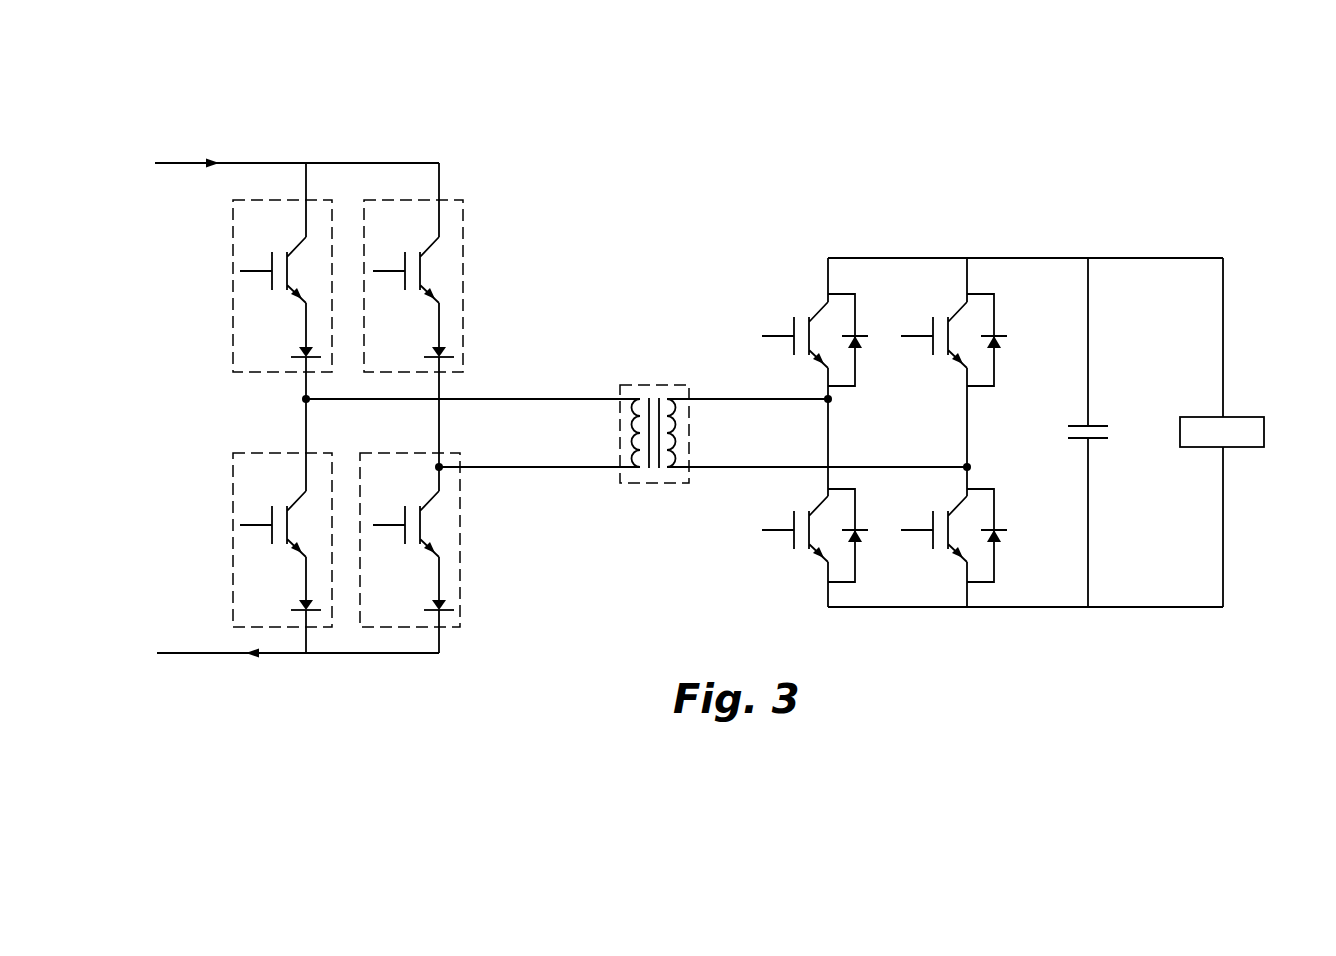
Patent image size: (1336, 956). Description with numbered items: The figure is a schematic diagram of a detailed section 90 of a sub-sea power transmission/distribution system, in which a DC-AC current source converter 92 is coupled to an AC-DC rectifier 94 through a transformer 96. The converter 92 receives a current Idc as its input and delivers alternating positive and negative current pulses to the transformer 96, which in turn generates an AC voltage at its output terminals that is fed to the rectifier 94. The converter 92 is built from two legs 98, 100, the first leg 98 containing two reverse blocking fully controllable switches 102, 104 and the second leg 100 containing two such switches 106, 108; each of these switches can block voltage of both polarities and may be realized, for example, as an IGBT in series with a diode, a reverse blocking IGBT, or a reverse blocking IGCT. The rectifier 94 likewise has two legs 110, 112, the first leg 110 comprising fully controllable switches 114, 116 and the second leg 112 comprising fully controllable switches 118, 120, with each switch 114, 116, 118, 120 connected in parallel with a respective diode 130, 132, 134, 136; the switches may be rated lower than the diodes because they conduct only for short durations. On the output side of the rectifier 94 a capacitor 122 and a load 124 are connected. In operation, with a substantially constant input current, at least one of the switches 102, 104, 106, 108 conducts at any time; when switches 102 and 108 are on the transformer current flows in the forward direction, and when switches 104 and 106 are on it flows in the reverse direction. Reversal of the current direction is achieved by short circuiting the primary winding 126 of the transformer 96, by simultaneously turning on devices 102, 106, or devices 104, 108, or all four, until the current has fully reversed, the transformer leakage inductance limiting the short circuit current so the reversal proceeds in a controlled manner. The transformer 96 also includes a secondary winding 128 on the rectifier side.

The detailed section 90 is at (1230, 105).
The DC-AC current source converter 92 is at (385, 76).
The AC-DC rectifier 94 is at (1110, 170).
The transformer 96 is at (690, 238).
The leg 98 is at (306, 183).
The leg 100 is at (439, 180).
The reverse blocking fully controllable switch 102 is at (233, 222).
The reverse blocking fully controllable switch 104 is at (233, 564).
The reverse blocking fully controllable switch 106 is at (463, 226).
The reverse blocking fully controllable switch 108 is at (460, 566).
The leg 110 is at (828, 278).
The leg 112 is at (967, 271).
The fully controllable switch 114 is at (781, 322).
The fully controllable switch 116 is at (783, 513).
The fully controllable switch 118 is at (930, 364).
The fully controllable switch 120 is at (926, 548).
The capacitor 122 is at (1092, 426).
The load 124 is at (1236, 417).
The primary winding 126 is at (640, 470).
The secondary winding 128 is at (668, 400).
The diode 130 is at (864, 322).
The diode 132 is at (864, 522).
The diode 134 is at (1017, 325).
The diode 136 is at (1007, 521).